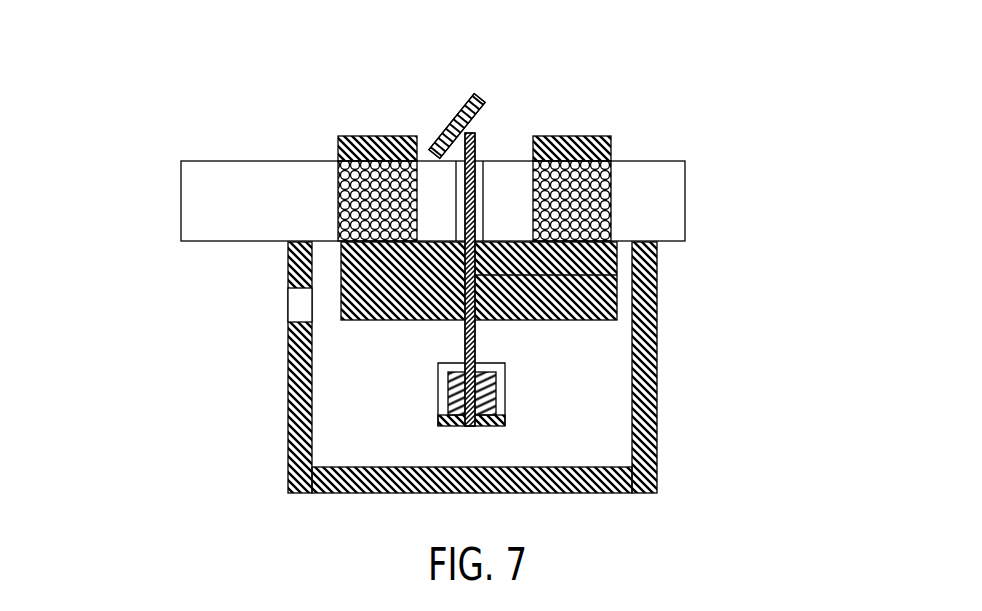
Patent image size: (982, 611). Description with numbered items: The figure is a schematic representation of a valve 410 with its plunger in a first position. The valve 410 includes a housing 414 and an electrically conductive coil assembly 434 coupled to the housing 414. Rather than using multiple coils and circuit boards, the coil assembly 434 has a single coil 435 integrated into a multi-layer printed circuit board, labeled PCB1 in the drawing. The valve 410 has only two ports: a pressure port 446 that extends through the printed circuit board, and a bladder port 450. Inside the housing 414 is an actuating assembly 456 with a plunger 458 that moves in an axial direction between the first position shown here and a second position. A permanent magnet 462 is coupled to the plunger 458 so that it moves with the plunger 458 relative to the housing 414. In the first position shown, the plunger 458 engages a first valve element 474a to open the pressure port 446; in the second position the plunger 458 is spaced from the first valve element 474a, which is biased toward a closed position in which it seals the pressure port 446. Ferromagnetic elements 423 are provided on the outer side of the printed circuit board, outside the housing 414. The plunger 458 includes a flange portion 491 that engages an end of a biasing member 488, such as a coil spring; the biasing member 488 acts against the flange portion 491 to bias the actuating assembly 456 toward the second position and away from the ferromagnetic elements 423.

The valve 410 is at (163, 121).
The housing 414 is at (656, 337).
The ferromagnetic elements 423 is at (347, 135).
The electrically conductive coil assembly 434 is at (672, 147).
The single coil 435 is at (612, 208).
The pressure port 446 is at (481, 187).
The bladder port 450 is at (293, 303).
The actuating assembly 456 is at (598, 347).
The plunger 458 is at (656, 273).
The permanent magnet 462 is at (382, 320).
The first valve element 474a is at (463, 107).
The biasing member 488 is at (455, 393).
The flange portion 491 is at (455, 423).